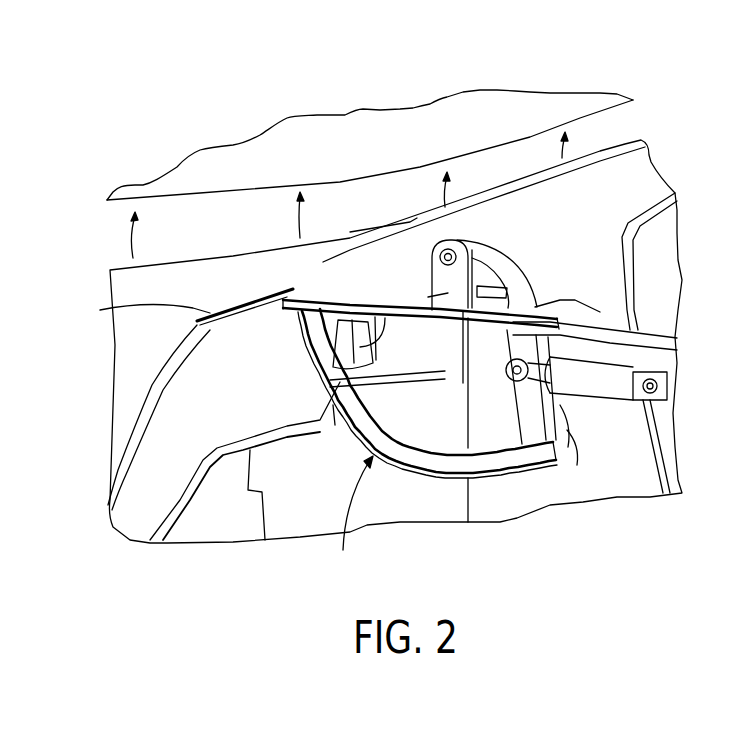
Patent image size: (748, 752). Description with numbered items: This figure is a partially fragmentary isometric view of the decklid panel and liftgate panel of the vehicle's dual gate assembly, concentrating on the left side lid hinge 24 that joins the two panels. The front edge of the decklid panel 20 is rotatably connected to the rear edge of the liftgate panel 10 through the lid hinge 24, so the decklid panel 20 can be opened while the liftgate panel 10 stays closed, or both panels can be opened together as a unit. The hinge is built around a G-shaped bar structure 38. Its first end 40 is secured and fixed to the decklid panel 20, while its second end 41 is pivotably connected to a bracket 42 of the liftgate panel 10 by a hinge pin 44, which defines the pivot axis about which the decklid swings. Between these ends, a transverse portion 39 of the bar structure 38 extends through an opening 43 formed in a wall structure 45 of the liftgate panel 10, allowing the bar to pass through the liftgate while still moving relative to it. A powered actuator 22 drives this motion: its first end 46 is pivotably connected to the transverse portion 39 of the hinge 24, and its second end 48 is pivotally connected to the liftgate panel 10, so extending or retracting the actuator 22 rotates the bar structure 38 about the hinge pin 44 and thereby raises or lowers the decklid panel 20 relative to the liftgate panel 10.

The liftgate panel 10 is at (627, 140).
The decklid panel 20 is at (123, 263).
The powered actuator 22 is at (613, 390).
The lid hinge 24 is at (350, 519).
The G-shaped bar structure 38 is at (340, 447).
The transverse portion 39 is at (570, 414).
The first end 40 is at (120, 309).
The second end 41 is at (488, 259).
The bracket 42 is at (427, 310).
The opening 43 is at (460, 327).
The hinge pin 44 is at (457, 238).
The wall structure 45 is at (340, 358).
The first end 46 is at (510, 382).
The second end 48 is at (650, 393).